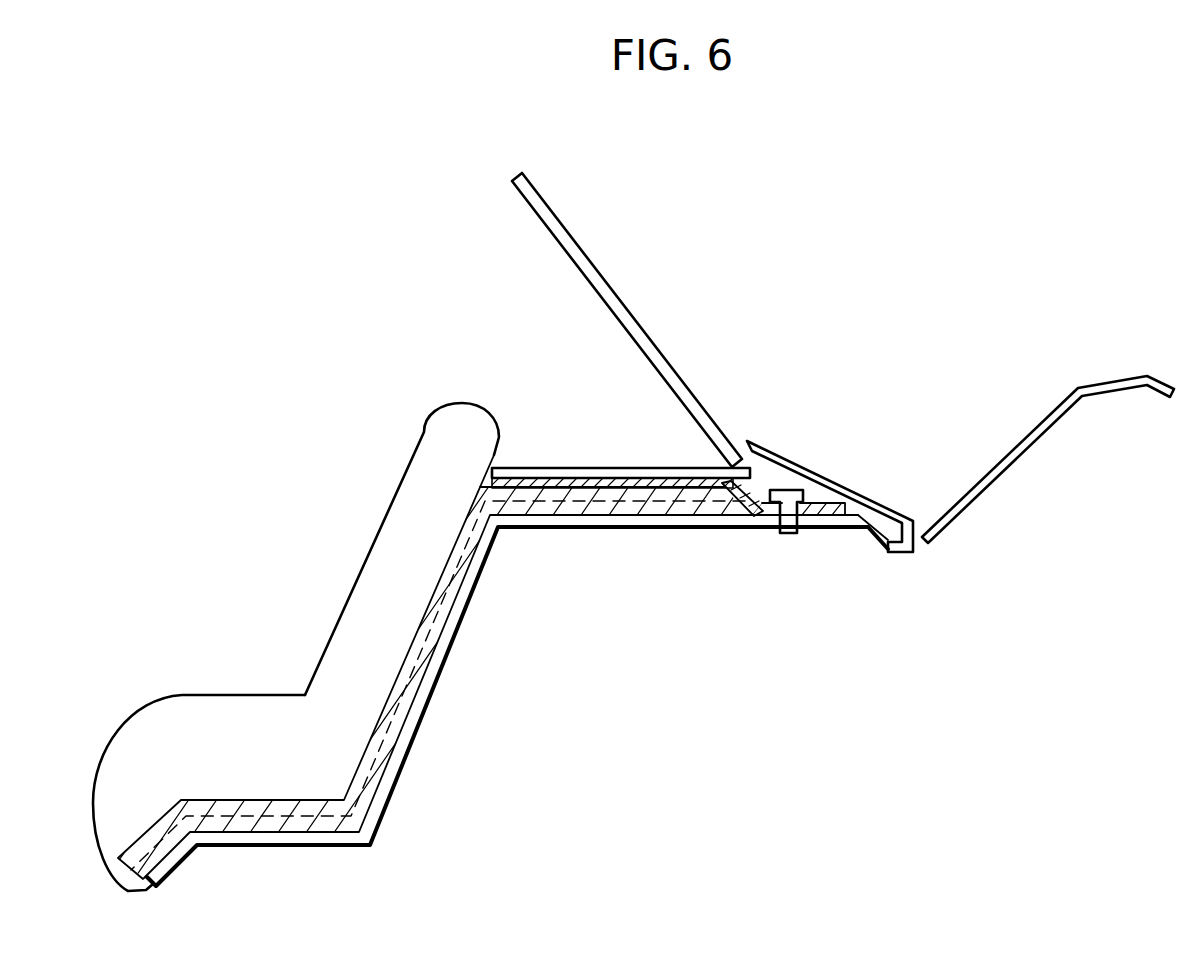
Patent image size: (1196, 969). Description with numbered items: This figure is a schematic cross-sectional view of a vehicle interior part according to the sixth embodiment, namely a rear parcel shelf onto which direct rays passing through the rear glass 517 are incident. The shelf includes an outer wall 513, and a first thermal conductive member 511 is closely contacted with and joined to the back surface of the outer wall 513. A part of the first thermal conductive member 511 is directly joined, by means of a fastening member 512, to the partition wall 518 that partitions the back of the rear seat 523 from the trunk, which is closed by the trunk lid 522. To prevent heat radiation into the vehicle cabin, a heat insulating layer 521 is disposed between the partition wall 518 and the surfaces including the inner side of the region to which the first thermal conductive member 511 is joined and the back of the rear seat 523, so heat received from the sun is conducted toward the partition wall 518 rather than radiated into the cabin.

The first thermal conductive member 511 is at (672, 488).
The fastening member 512 is at (790, 490).
The outer wall 513 is at (580, 466).
The rear glass 517 is at (623, 303).
The partition wall 518 is at (455, 625).
The heat insulating layer 521 is at (588, 508).
The trunk lid 522 is at (1015, 440).
The rear seat 523 is at (348, 600).